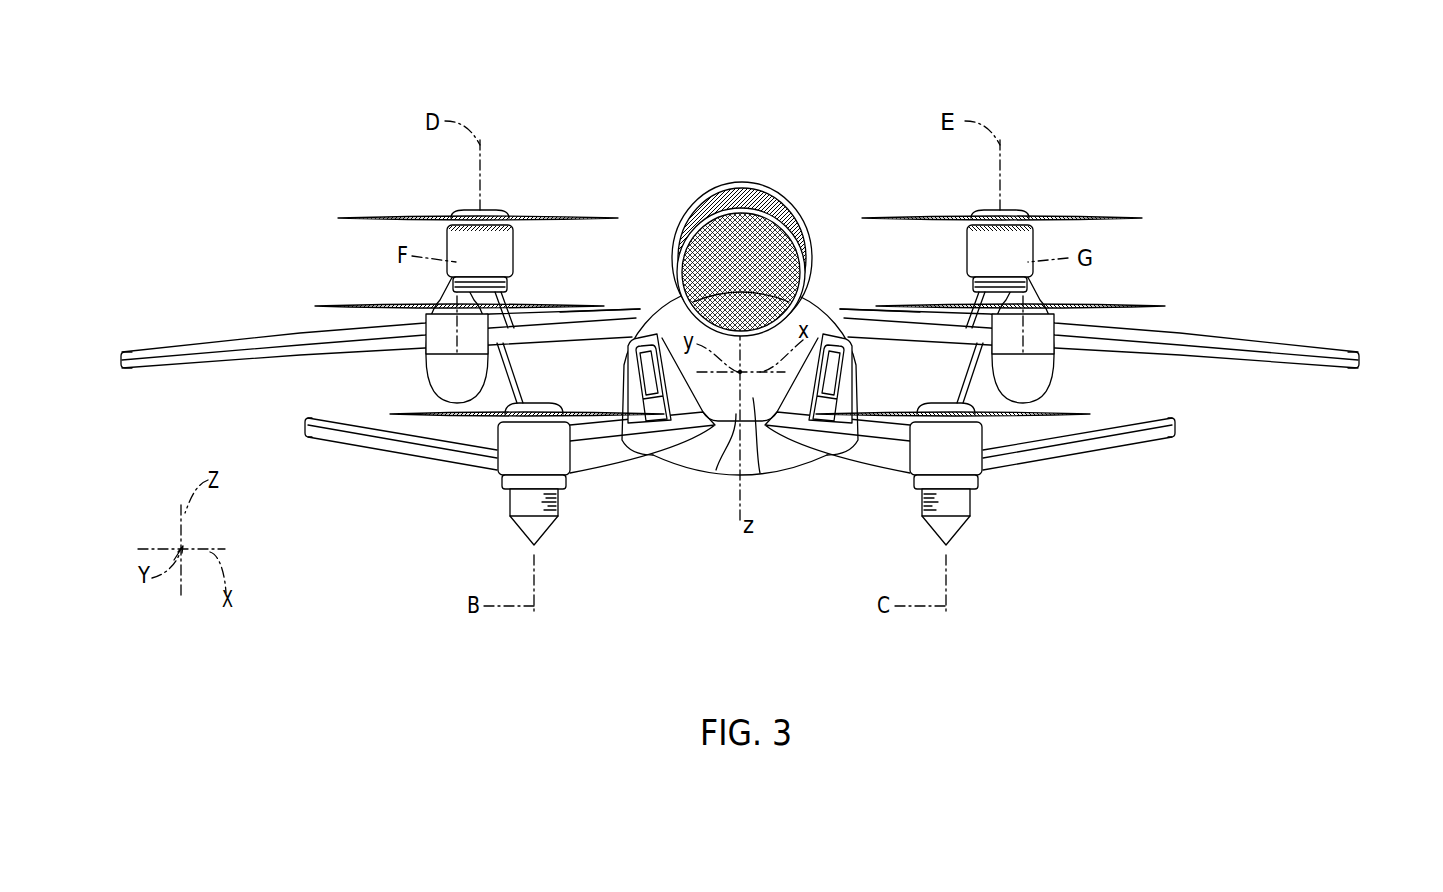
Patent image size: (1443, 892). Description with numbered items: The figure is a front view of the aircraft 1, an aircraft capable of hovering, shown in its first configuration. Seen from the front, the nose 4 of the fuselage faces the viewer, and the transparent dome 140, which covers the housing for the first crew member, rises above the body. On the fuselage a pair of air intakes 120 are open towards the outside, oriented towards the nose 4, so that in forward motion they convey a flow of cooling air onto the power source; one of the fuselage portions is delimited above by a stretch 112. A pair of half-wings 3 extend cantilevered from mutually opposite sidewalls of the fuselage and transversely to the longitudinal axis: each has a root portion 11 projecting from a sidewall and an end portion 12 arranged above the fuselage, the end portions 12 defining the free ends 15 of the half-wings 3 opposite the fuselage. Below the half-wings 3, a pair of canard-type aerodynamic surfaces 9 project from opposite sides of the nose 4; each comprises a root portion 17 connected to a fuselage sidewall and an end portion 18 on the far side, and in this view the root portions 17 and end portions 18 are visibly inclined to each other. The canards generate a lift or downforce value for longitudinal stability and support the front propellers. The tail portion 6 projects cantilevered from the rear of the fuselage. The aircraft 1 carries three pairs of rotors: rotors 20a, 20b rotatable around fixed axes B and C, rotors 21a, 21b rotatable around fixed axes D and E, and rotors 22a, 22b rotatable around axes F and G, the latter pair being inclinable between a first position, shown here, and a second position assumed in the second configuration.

The aircraft 1 is at (882, 80).
The half-wings 3 is at (246, 320).
The nose 4 is at (716, 470).
The tail portion 6 is at (652, 272).
The canard-type aerodynamic surfaces 9 is at (418, 468).
The root portions 11 is at (611, 310).
The end portions 12 is at (165, 352).
The free ends 15 is at (118, 358).
The root portions 17 is at (620, 452).
The end portions 18 is at (361, 437).
The rotor 20a is at (500, 496).
The rotor 20b is at (989, 499).
The rotor 21a is at (428, 198).
The rotor 21b is at (1052, 198).
The rotor 22a is at (392, 290).
The rotor 22b is at (1105, 292).
The stretch 112 is at (760, 473).
The air intakes 120 is at (645, 378).
The transparent dome 140 is at (758, 262).